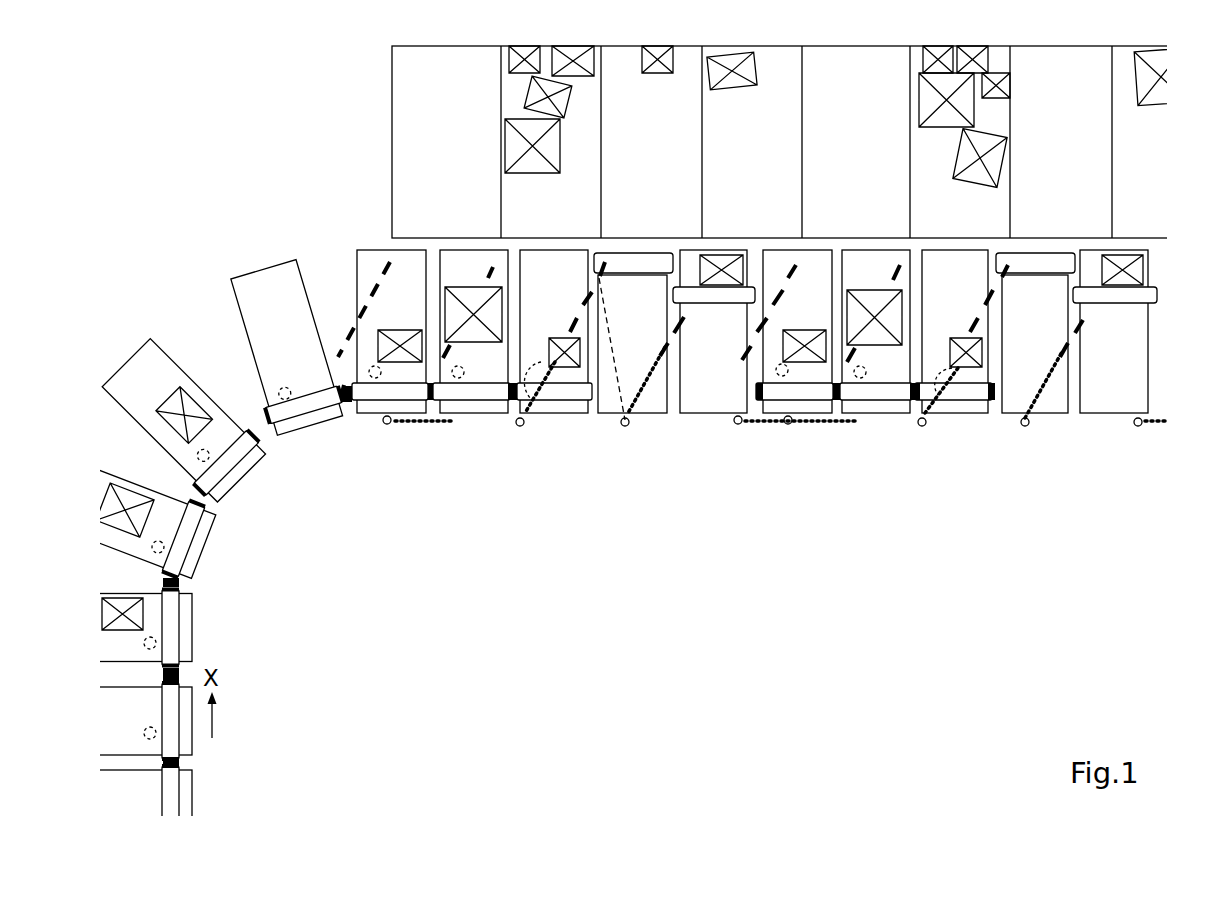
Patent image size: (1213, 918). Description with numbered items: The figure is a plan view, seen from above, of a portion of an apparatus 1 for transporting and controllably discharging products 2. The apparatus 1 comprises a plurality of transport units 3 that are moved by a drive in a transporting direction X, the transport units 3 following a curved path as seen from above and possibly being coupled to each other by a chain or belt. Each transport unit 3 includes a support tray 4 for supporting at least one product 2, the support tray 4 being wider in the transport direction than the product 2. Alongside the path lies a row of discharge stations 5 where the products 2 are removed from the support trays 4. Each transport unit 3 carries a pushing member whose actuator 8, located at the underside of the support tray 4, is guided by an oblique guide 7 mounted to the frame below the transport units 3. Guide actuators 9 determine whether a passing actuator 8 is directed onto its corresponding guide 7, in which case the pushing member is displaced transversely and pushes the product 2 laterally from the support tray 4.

The apparatus 1 is at (166, 148).
The product 2 is at (188, 400).
The transport unit 3 is at (113, 367).
The support tray 4 is at (180, 384).
The discharge station 5 is at (422, 90).
The guide 7 is at (627, 428).
The actuator 8 is at (523, 418).
The guide actuator 9 is at (535, 415).